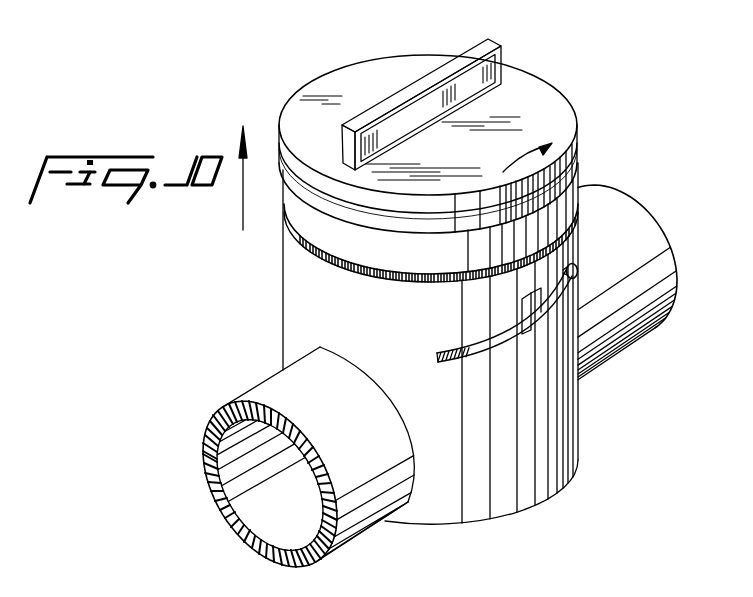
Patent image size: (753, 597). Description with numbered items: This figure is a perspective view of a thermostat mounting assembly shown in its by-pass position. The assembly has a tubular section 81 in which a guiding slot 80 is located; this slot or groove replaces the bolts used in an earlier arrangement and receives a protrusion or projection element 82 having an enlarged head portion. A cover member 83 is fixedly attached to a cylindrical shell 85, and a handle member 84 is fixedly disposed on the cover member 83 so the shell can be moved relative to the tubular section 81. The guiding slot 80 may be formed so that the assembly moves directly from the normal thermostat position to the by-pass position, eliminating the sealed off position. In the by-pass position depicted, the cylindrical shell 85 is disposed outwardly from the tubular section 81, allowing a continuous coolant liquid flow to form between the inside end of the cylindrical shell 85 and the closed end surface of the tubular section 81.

The guiding slot 80 is at (482, 352).
The tubular section 81 is at (288, 334).
The projection element 82 is at (577, 278).
The cover member 83 is at (533, 87).
The handle member 84 is at (411, 92).
The cylindrical shell 85 is at (567, 197).